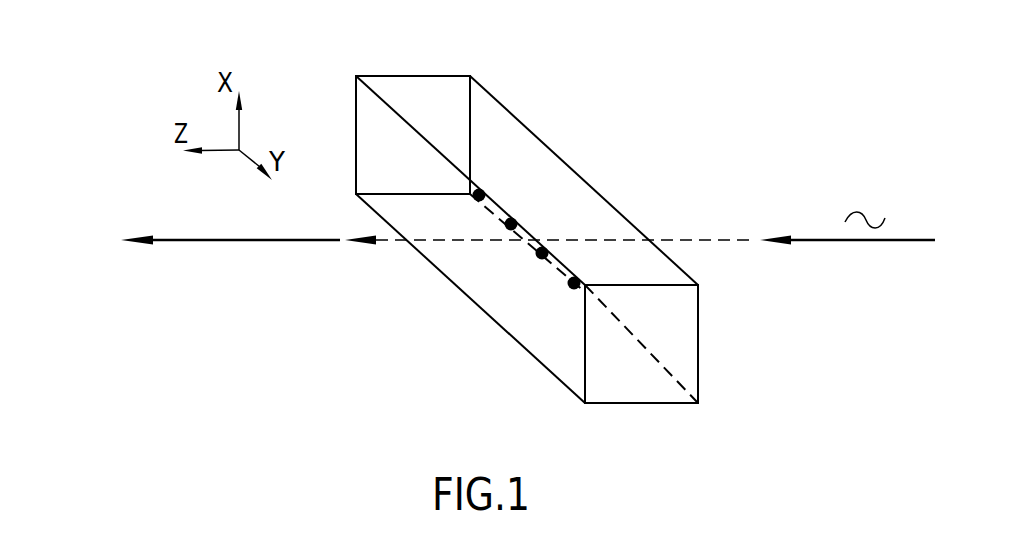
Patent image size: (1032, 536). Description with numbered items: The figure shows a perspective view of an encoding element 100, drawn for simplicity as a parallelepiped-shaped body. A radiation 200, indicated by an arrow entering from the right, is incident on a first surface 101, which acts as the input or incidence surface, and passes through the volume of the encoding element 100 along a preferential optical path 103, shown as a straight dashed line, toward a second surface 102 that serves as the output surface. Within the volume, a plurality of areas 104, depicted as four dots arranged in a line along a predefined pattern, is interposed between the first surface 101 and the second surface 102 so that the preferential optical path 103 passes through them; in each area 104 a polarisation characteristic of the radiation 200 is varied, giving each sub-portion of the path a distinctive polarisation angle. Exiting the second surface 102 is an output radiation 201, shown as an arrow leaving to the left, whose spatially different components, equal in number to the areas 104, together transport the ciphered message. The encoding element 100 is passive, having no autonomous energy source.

The encoding element 100 is at (587, 82).
The first surface 101 is at (670, 335).
The second surface 102 is at (557, 350).
The preferential optical path 103 is at (634, 212).
The areas 104 is at (565, 278).
The radiation 200 is at (933, 213).
The output radiation 201 is at (177, 267).